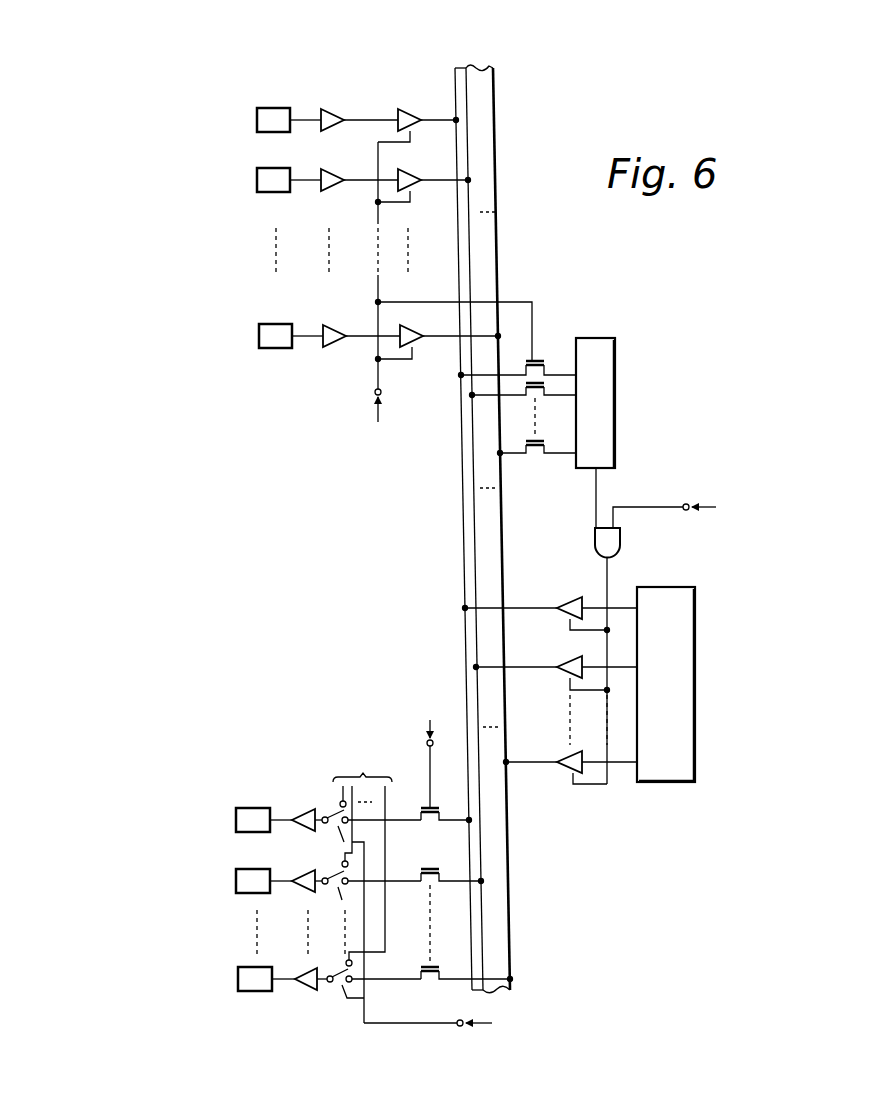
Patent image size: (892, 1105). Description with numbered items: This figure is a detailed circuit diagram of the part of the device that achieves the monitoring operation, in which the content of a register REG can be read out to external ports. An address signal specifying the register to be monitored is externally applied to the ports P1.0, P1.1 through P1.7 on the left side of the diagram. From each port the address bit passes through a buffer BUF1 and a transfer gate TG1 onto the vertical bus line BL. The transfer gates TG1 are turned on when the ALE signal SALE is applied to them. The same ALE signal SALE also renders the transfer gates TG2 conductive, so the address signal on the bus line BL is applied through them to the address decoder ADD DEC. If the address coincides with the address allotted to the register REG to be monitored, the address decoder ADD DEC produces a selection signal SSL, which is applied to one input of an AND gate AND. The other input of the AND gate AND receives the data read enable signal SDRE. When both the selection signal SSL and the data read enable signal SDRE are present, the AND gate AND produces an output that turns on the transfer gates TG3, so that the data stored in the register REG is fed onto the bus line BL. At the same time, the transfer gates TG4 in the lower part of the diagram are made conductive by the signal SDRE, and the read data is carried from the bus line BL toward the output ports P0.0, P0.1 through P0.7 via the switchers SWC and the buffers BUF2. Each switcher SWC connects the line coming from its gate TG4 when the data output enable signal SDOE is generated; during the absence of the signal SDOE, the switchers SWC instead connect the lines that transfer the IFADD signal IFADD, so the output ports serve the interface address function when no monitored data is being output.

The bus line BL is at (499, 95).
The port P1.0 is at (257, 120).
The port P1.1 is at (257, 180).
The port P1.7 is at (259, 336).
The buffer BUF1 is at (330, 107).
The transfer gate TG1 is at (405, 107).
The ALE signal SALE is at (461, 300).
The transfer gate TG2 is at (540, 363).
The address decoder ADD DEC is at (595, 403).
The selection signal SSL is at (621, 498).
The data read enable signal SDRE is at (592, 649).
The AND gate AND is at (621, 545).
The transfer gate TG3 is at (568, 597).
The register REG is at (666, 684).
The IFADD signal IFADD is at (355, 873).
The port P0.0 is at (236, 820).
The port P0.1 is at (236, 881).
The port P0.7 is at (238, 979).
The buffer BUF2 is at (303, 812).
The switcher SWC is at (335, 832).
The transfer gate TG4 is at (433, 822).
The data output enable signal SDOE is at (461, 1023).